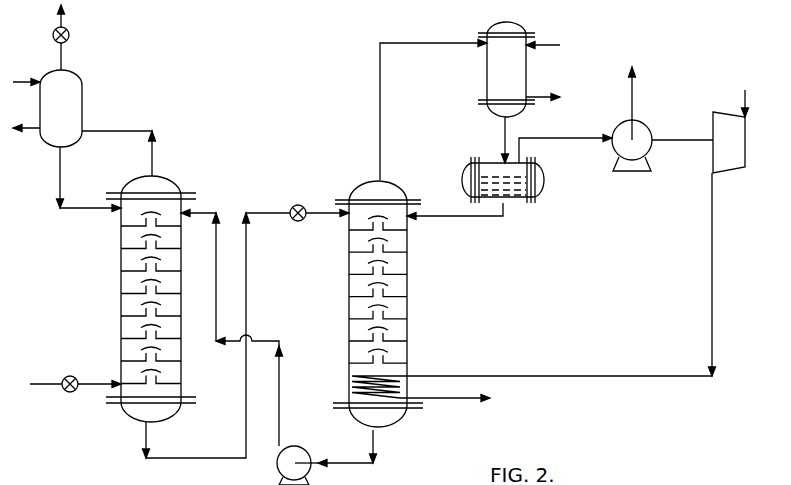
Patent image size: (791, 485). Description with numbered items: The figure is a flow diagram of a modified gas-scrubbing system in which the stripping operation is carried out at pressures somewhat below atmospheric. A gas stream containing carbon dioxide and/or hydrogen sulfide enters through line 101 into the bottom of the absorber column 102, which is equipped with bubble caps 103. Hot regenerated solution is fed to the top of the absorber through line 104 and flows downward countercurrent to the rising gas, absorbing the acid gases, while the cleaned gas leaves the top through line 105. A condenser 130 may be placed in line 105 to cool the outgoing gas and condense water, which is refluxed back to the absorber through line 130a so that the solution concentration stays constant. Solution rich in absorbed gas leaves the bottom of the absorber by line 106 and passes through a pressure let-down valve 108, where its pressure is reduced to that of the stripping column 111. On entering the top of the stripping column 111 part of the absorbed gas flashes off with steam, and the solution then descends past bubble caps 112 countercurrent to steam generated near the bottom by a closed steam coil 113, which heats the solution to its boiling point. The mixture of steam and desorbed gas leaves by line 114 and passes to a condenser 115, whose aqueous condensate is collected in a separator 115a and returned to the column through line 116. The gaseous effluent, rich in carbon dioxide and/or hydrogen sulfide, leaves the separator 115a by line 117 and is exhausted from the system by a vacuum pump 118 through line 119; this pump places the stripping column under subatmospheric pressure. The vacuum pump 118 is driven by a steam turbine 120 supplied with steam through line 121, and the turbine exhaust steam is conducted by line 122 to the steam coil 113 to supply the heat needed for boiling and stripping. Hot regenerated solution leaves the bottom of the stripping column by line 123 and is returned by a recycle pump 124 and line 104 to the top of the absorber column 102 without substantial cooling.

The line 101 is at (53, 380).
The absorber column 102 is at (121, 278).
The bubble caps 103 is at (140, 332).
The line 104 is at (221, 194).
The line 105 is at (70, 53).
The line 106 is at (232, 461).
The pressure let-down valve 108 is at (301, 205).
The stripping column 111 is at (407, 293).
The bubble caps 112 is at (384, 268).
The closed steam coil 113 is at (390, 374).
The line 114 is at (381, 116).
The condenser 115 is at (527, 81).
The separator 115a is at (545, 185).
The line 116 is at (478, 217).
The line 117 is at (555, 137).
The vacuum pump 118 is at (647, 126).
The line 119 is at (633, 91).
The steam turbine 120 is at (738, 112).
The line 121 is at (749, 109).
The line 122 is at (713, 296).
The line 123 is at (376, 445).
The recycle pump 124 is at (305, 436).
The condenser 130 is at (82, 103).
The line 130a is at (59, 192).